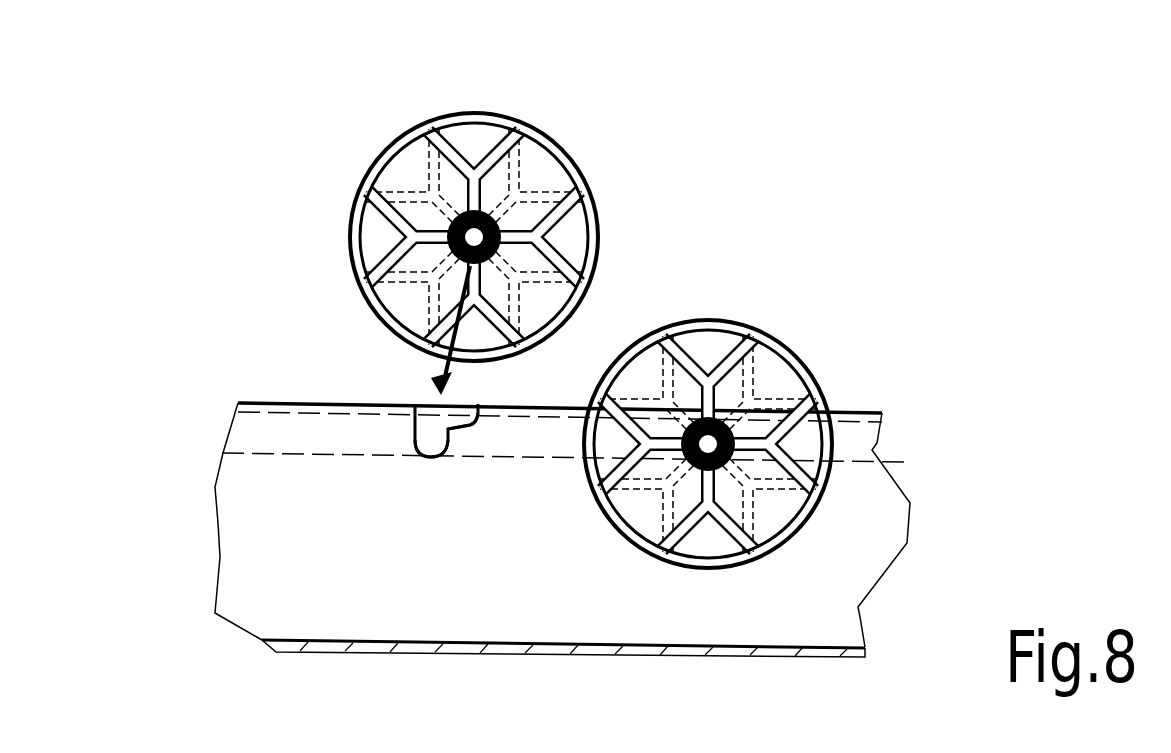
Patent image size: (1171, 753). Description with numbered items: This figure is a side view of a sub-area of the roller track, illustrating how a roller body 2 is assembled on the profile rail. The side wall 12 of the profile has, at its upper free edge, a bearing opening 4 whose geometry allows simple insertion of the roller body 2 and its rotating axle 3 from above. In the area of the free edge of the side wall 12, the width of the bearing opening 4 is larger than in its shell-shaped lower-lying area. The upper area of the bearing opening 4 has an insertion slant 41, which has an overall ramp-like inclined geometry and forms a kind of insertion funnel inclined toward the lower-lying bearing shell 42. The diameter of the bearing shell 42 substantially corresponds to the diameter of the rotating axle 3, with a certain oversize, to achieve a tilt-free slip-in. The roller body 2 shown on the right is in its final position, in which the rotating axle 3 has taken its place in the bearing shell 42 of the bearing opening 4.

The roller body 2 is at (507, 117).
The rotating axle 3 is at (710, 447).
The bearing opening 4 is at (399, 438).
The insertion slant 41 is at (478, 424).
The bearing shell 42 is at (447, 457).
The side wall 12 is at (346, 588).